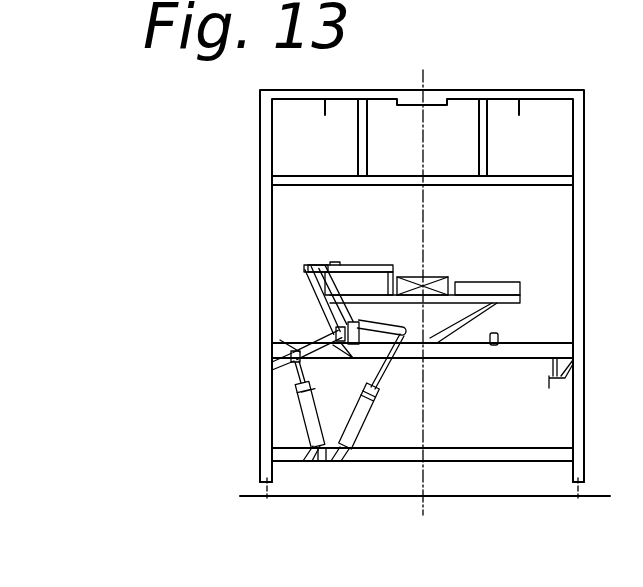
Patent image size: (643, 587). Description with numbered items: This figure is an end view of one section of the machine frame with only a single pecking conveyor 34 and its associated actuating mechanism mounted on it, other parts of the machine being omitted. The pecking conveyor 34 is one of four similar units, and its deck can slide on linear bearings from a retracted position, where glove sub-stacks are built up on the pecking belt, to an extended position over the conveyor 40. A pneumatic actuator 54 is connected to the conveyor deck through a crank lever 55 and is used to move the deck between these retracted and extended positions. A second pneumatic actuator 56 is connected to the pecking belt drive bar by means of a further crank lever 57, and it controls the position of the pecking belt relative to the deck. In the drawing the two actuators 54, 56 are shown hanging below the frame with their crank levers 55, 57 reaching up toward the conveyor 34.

The pecking conveyor 34 is at (368, 265).
The conveyor 40 is at (405, 278).
The pneumatic actuator 54 is at (300, 402).
The crank lever 55 is at (310, 285).
The second pneumatic actuator 56 is at (372, 404).
The crank lever 57 is at (352, 262).